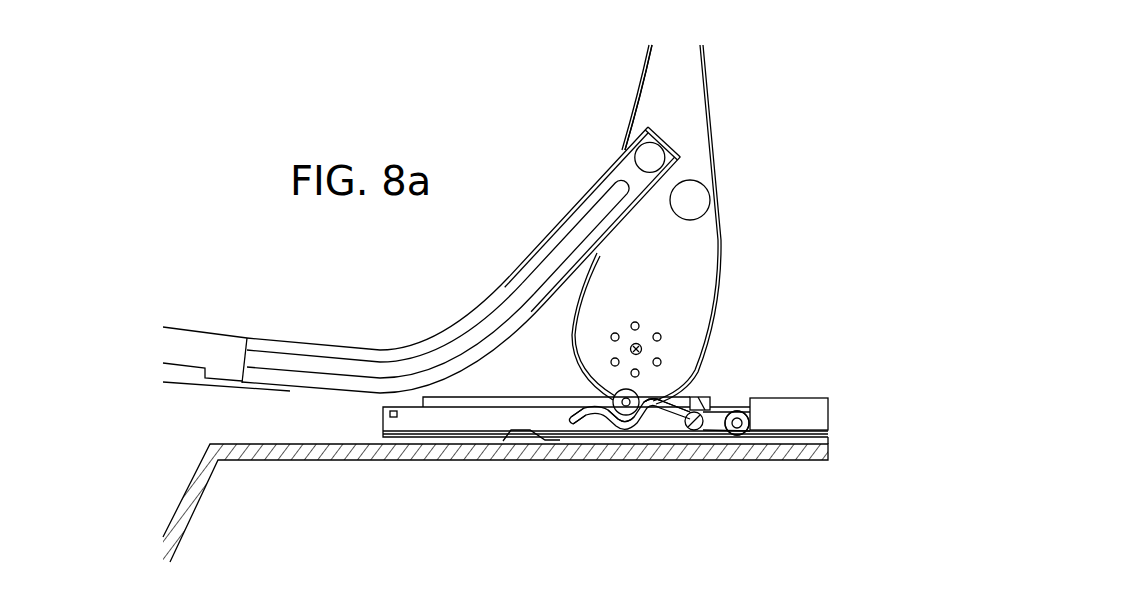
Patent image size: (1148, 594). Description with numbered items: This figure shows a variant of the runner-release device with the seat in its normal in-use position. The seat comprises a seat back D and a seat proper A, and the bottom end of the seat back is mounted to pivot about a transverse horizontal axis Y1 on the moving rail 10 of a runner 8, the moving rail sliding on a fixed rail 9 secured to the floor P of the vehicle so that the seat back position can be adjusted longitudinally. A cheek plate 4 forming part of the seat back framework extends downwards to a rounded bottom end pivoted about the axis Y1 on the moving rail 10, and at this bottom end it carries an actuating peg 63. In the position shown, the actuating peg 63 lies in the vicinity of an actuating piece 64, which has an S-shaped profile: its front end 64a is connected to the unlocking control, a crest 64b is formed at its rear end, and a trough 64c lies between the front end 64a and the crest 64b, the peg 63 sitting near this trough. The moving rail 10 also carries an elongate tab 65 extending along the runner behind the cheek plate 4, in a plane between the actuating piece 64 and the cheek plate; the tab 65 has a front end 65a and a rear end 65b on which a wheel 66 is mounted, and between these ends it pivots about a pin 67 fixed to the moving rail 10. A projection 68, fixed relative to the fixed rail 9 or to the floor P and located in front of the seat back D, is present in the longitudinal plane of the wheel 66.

The cheek plate 4 is at (693, 160).
The runner 8 is at (869, 392).
The fixed rail 9 is at (413, 423).
The moving rail 10 is at (805, 408).
The actuating peg 63 is at (613, 393).
The actuating piece 64 is at (592, 425).
The front end 64a is at (548, 432).
The crest 64b is at (660, 410).
The trough 64c is at (620, 430).
The elongate tab 65 is at (698, 430).
The front end 65a is at (653, 400).
The rear end 65b is at (742, 412).
The wheel 66 is at (740, 432).
The pin 67 is at (708, 400).
The projection 68 is at (518, 437).
The seat proper A is at (298, 317).
The seat back D is at (755, 61).
The floor P is at (193, 502).
The transverse horizontal axis Y1 is at (640, 345).